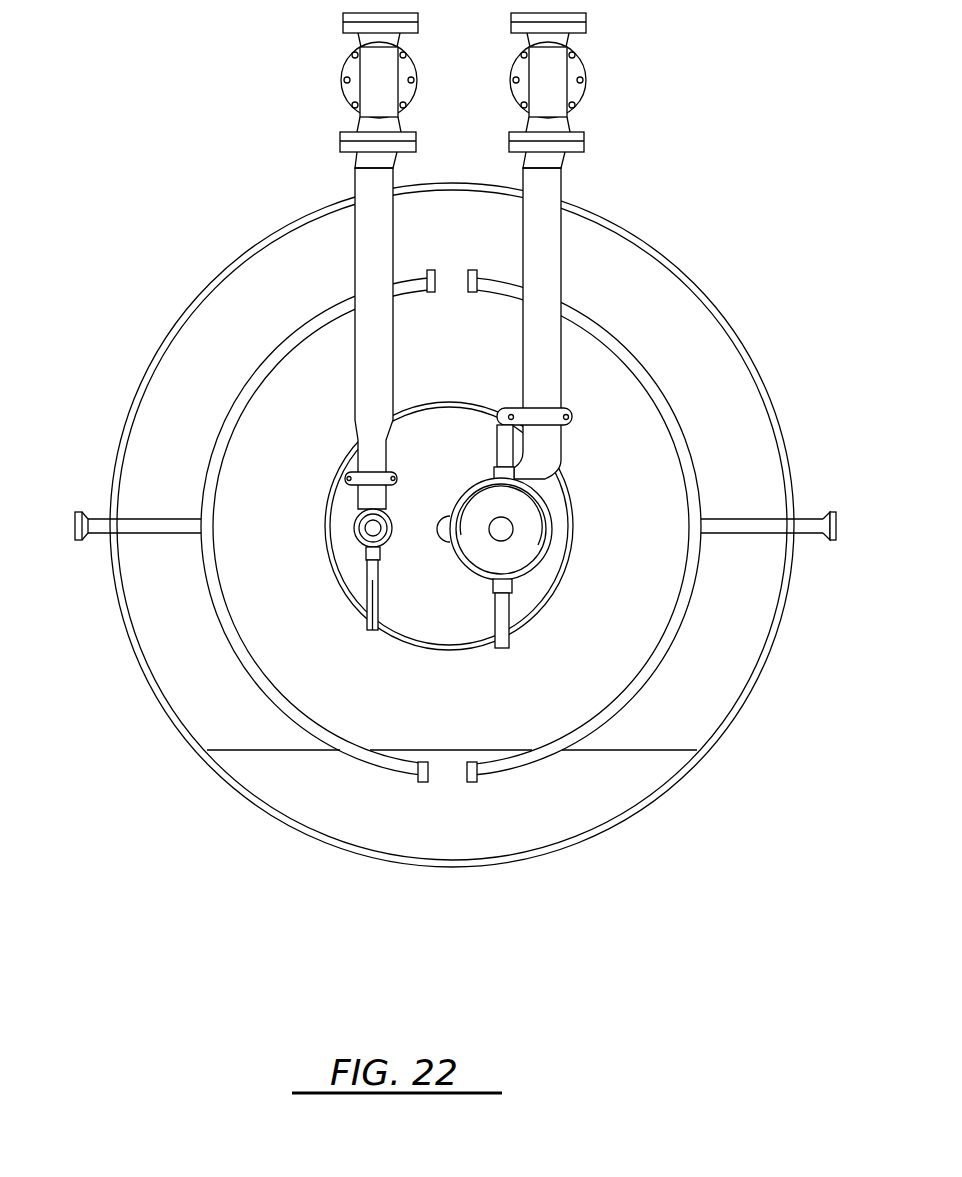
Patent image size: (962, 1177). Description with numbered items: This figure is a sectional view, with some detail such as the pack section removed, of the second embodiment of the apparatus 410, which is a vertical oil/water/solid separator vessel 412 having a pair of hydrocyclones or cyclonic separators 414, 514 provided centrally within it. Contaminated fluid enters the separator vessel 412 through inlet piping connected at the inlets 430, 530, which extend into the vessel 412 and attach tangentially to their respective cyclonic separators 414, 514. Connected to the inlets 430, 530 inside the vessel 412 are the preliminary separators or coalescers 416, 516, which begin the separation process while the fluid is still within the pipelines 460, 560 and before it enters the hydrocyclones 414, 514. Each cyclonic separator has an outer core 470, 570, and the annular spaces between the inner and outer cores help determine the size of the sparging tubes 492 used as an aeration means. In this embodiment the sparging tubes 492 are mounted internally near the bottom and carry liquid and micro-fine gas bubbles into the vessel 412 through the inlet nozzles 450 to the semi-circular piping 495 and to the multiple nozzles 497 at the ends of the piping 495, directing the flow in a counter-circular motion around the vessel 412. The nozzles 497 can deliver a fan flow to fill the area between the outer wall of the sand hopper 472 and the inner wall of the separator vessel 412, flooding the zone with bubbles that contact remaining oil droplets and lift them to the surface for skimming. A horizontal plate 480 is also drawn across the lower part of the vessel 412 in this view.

The apparatus 410 is at (740, 287).
The separator vessel 412 is at (688, 777).
The cyclonic separator 414 is at (450, 563).
The preliminary separator 416 is at (585, 187).
The inlet 430 is at (585, 142).
The inlet nozzle 450 is at (105, 519).
The pipeline 460 is at (562, 262).
The outer core 470 is at (528, 577).
The sand hopper 472 is at (428, 650).
The baffle plate 480 is at (625, 750).
The sparging tube 492 is at (172, 560).
The semi-circular piping 495 is at (690, 438).
The nozzle 497 is at (497, 234).
The cyclonic separator 514 is at (400, 512).
The preliminary separator 516 is at (333, 172).
The inlet 530 is at (340, 135).
The pipeline 560 is at (355, 274).
The outer core 570 is at (345, 542).